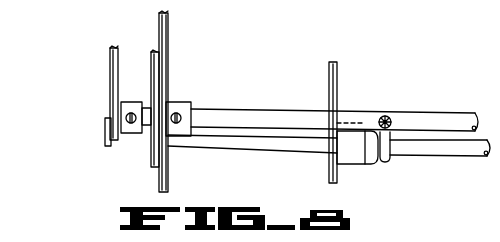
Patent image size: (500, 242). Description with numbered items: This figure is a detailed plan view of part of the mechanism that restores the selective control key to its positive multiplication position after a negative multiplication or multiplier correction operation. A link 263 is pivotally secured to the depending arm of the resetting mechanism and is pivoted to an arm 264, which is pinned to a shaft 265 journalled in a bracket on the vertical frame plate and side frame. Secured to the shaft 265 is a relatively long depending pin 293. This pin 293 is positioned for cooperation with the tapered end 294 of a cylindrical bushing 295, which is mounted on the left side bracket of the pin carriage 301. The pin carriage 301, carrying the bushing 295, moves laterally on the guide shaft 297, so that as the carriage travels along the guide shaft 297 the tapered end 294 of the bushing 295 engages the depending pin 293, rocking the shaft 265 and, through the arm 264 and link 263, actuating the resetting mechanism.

The link 263 is at (112, 70).
The arm 264 is at (117, 146).
The shaft 265 is at (229, 117).
The guide shaft 297 is at (246, 145).
The pin carriage 301 is at (335, 83).
The tapered end 294 is at (369, 140).
The cylindrical bushing 295 is at (350, 157).
The depending pin 293 is at (386, 160).